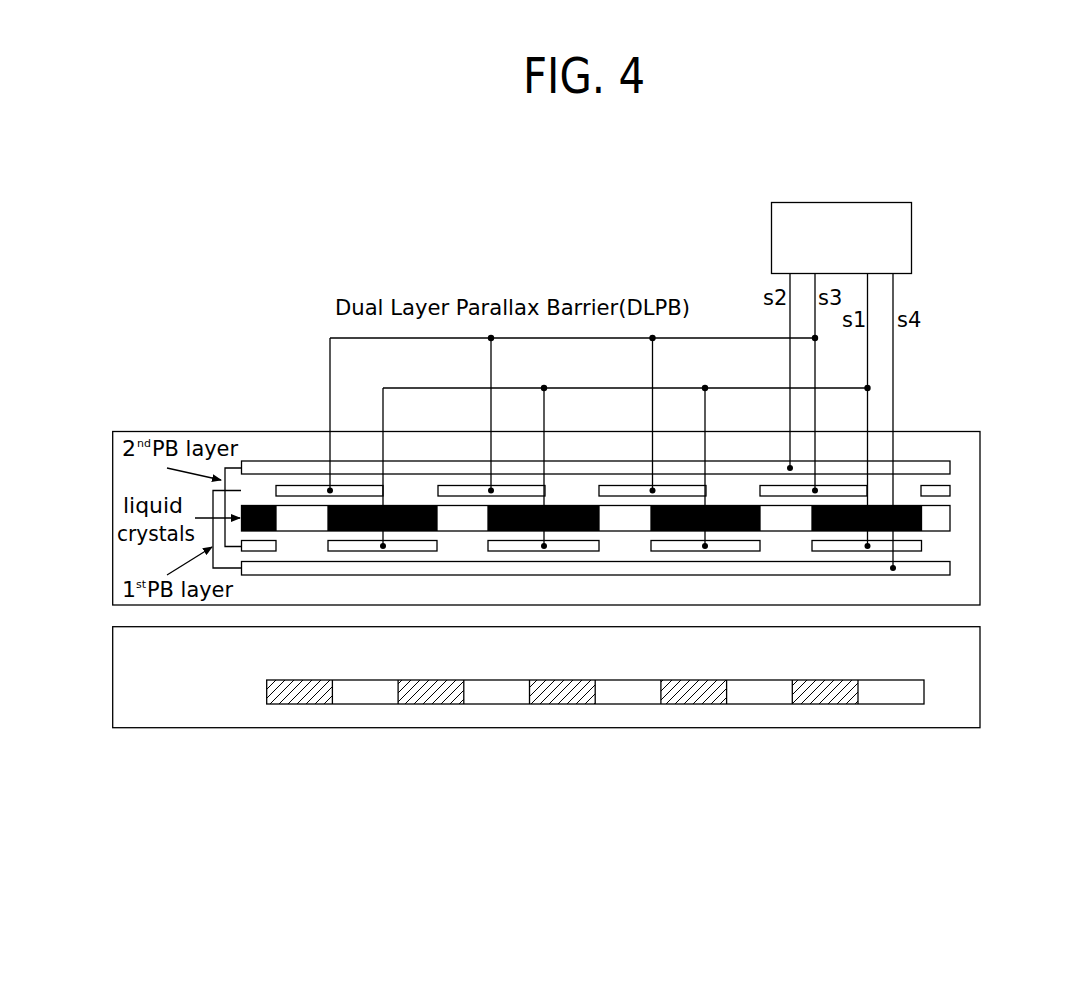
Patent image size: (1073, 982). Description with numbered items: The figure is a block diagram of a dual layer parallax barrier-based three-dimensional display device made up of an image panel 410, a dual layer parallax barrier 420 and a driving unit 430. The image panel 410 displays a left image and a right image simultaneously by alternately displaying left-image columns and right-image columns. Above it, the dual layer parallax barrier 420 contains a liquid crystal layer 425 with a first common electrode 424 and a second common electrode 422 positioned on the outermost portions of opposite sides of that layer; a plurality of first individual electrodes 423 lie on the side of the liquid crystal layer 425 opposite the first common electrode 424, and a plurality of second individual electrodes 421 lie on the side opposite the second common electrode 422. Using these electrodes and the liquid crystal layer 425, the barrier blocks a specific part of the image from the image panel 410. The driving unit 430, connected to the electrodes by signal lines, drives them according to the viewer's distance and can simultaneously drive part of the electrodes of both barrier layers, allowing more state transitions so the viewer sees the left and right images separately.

The image panel 410 is at (980, 641).
The dual layer parallax barrier 420 is at (980, 437).
The second individual electrodes 421 is at (922, 546).
The second common electrode 422 is at (950, 462).
The first individual electrodes 423 is at (950, 490).
The first common electrode 424 is at (950, 568).
The liquid crystal layer 425 is at (950, 515).
The driving unit 430 is at (912, 237).